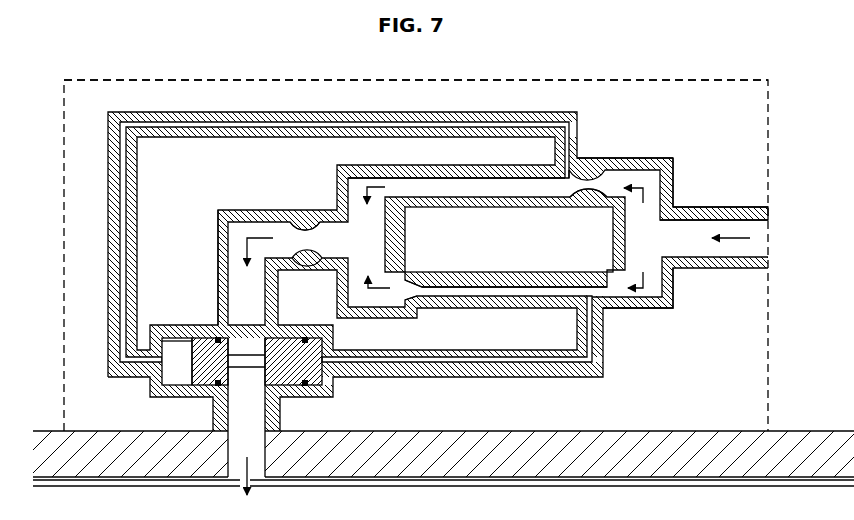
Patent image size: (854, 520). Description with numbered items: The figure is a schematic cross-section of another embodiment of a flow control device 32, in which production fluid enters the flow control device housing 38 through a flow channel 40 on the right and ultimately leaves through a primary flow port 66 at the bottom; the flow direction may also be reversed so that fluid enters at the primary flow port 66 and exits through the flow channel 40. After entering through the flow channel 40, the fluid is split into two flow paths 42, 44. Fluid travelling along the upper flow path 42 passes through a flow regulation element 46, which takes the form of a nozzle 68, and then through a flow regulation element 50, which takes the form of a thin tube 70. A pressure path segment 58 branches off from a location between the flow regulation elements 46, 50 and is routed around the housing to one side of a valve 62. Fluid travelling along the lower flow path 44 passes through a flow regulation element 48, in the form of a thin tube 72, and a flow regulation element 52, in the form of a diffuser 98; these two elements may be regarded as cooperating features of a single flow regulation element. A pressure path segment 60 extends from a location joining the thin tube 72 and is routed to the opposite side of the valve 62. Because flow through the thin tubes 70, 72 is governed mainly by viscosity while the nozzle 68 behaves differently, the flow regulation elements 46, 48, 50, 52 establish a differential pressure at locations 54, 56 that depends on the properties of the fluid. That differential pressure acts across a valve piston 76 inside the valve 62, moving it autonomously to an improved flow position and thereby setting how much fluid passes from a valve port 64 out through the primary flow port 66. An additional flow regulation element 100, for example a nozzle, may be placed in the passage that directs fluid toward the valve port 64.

The flow control device 32 is at (138, 62).
The flow control device housing 38 is at (683, 78).
The flow channel 40 is at (713, 212).
The flow path 42 is at (673, 185).
The flow path 44 is at (669, 292).
The flow regulation element 46 is at (618, 155).
The flow regulation element 48 is at (499, 275).
The flow regulation element 50 is at (417, 164).
The flow regulation element 52 is at (422, 304).
The location 54 is at (573, 162).
The location 56 is at (576, 310).
The pressure path segment 58 is at (244, 116).
The pressure path segment 60 is at (442, 377).
The valve 62 is at (190, 326).
The valve port 64 is at (220, 218).
The primary flow port 66 is at (270, 402).
The nozzle 68 is at (584, 205).
The thin tube 70 is at (453, 177).
The thin tube 72 is at (528, 287).
The valve piston 76 is at (300, 368).
The diffuser 98 is at (420, 283).
The flow regulation element 100 is at (305, 220).